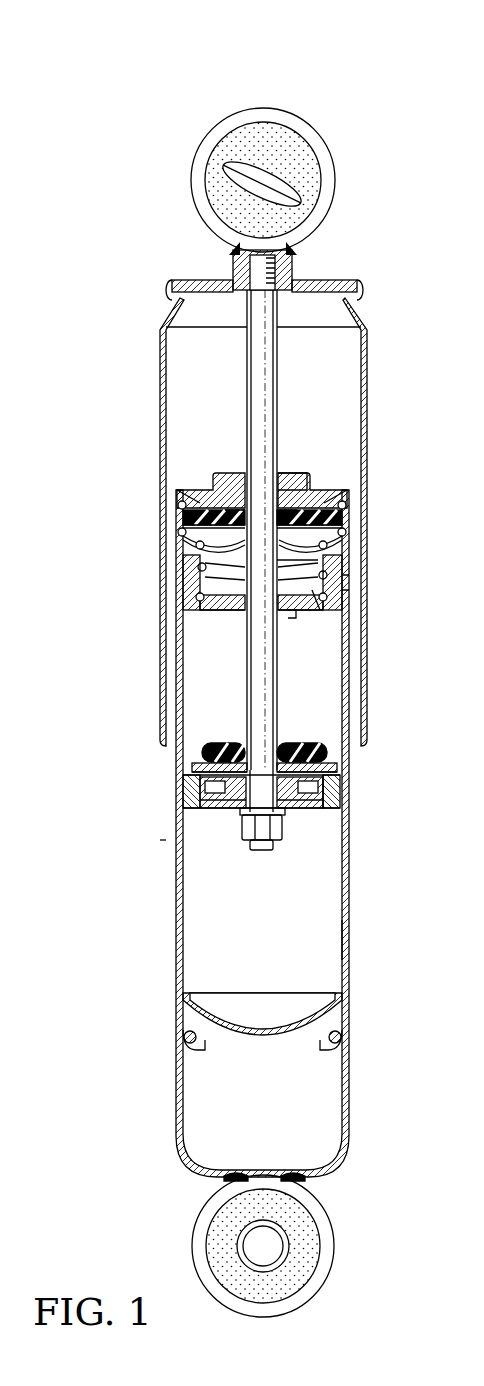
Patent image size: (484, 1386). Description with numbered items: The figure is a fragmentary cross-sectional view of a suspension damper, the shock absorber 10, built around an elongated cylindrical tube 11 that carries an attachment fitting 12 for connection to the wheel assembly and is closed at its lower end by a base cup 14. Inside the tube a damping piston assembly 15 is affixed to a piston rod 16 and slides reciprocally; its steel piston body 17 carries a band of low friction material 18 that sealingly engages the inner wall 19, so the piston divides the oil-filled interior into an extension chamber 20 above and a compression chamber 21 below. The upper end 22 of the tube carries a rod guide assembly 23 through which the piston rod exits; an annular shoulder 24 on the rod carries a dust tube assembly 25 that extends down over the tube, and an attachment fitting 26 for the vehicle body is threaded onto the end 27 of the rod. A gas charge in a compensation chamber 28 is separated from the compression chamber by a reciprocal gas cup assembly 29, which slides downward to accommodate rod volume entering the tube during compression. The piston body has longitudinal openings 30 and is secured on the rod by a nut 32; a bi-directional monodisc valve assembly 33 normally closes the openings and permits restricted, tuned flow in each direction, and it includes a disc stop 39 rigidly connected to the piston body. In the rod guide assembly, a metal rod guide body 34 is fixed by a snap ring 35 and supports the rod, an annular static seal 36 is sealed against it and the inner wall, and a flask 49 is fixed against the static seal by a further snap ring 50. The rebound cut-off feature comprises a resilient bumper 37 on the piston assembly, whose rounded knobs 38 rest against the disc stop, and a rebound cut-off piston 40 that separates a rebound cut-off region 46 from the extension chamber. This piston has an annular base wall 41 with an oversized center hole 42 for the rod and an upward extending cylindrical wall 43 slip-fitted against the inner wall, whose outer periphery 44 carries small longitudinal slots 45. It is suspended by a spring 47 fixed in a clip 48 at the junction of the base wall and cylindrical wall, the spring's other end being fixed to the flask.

The shock absorber 10 is at (151, 843).
The elongated cylindrical tube 11 is at (178, 932).
The attachment fitting 12 is at (328, 1247).
The base cup 14 is at (311, 1174).
The damping piston assembly 15 is at (177, 780).
The piston rod 16 is at (272, 372).
The piston body 17 is at (336, 806).
The band of low friction material 18 is at (342, 790).
The inner wall 19 is at (337, 934).
The extension chamber 20 is at (205, 701).
The compression chamber 21 is at (241, 966).
The upper end 22 is at (348, 492).
The rod guide assembly 23 is at (177, 506).
The annular shoulder 24 is at (290, 287).
The dust tube assembly 25 is at (159, 333).
The attachment fitting 26 is at (205, 157).
The end of piston rod 27 is at (260, 256).
The compensation chamber 28 is at (245, 1129).
The gas cup assembly 29 is at (334, 1010).
The openings 30 is at (205, 793).
The nut 32 is at (281, 826).
The valve assembly 33 is at (238, 508).
The rod guide body 34 is at (299, 473).
The snap ring 35 is at (346, 506).
The static seal 36 is at (343, 519).
The bumper 37 is at (207, 751).
The knobs 38 is at (200, 754).
The disc stop 39 is at (333, 766).
The rebound cut-off piston 40 is at (177, 605).
The annular base wall 41 is at (208, 611).
The center hole 42 is at (292, 614).
The cylindrical wall 43 is at (188, 583).
The outer periphery 44 is at (350, 582).
The slots 45 is at (343, 600).
The rebound cut-off region 46 is at (188, 548).
The spring 47 is at (199, 567).
The clip 48 is at (321, 601).
The flask 49 is at (334, 565).
The snap ring 50 is at (345, 533).